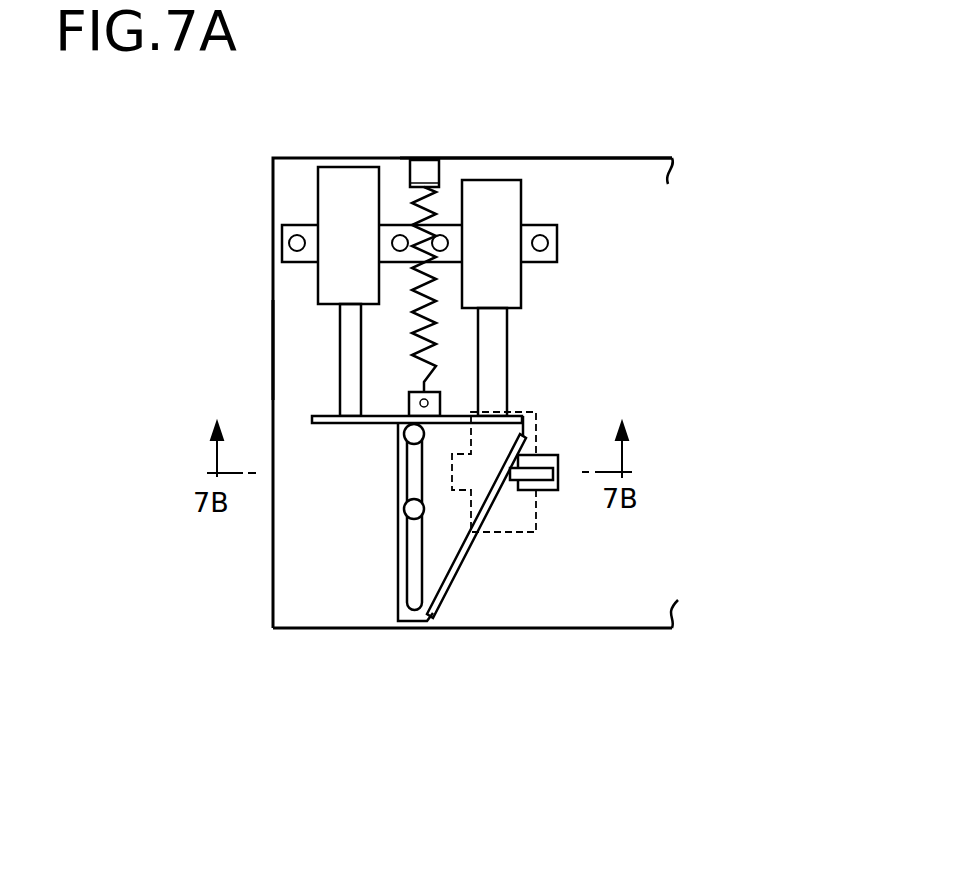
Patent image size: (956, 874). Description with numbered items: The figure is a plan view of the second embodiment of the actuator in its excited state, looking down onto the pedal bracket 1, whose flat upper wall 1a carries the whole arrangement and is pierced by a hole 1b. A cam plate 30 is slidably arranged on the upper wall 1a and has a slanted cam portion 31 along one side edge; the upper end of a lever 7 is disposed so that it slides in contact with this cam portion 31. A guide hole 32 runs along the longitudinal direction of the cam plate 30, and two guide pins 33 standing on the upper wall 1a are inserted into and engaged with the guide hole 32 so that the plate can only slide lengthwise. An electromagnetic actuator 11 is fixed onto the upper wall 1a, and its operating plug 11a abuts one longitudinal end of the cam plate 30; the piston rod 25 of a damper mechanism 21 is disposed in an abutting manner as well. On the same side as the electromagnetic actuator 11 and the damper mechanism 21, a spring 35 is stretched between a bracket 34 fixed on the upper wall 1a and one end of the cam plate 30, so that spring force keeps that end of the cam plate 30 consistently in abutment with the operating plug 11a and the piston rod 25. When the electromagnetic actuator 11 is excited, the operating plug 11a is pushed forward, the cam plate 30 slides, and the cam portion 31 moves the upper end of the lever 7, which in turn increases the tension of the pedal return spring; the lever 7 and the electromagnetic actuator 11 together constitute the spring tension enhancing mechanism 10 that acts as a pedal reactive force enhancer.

The pedal bracket 1 is at (262, 242).
The upper wall 1a is at (272, 345).
The hole 1b is at (545, 455).
The lever 7 is at (545, 480).
The spring tension enhancing mechanism 10 is at (580, 278).
The electromagnetic actuator 11 is at (487, 180).
The operating plug 11a is at (507, 357).
The damper mechanism 21 is at (335, 167).
The piston rod 25 is at (339, 343).
The cam plate 30 is at (398, 548).
The cam portion 31 is at (462, 565).
The guide hole 32 is at (412, 575).
The guide pins 33 is at (404, 507).
The bracket 34 is at (427, 162).
The spring 35 is at (422, 350).